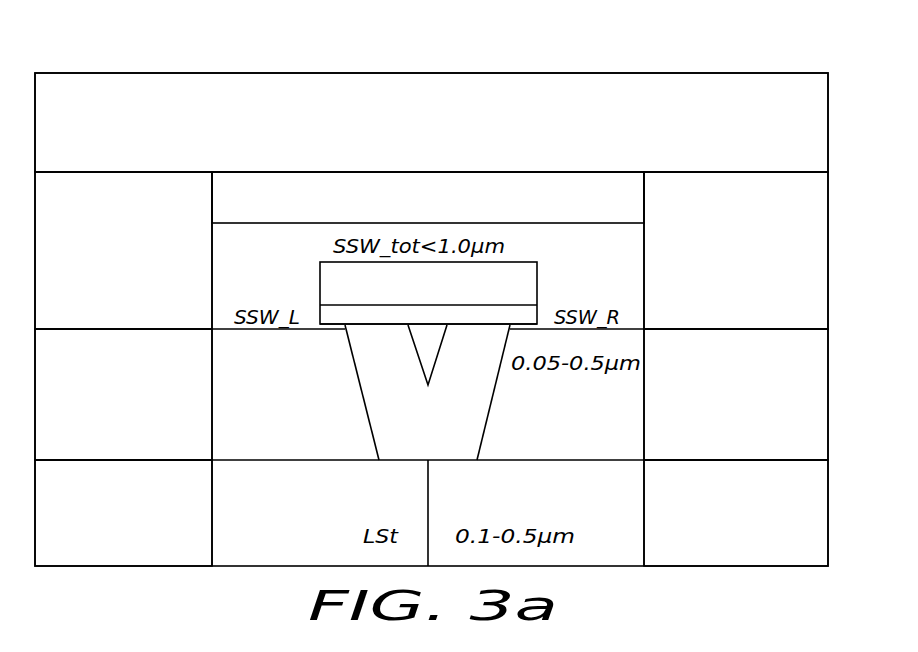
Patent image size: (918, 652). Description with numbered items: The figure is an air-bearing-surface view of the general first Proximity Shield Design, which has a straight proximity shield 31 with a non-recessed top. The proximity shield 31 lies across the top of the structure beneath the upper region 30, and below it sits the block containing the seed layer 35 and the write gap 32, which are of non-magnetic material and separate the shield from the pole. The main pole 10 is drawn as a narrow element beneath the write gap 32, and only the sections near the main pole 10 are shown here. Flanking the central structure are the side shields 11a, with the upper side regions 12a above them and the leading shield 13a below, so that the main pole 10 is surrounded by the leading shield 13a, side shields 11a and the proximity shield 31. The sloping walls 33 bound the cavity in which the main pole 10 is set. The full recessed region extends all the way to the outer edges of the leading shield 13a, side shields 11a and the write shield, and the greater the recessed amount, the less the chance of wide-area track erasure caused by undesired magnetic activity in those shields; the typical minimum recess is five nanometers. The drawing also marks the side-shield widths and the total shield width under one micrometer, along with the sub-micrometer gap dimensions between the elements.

The upper layer / substrate region 30 is at (814, 102).
The proximity shield 31 is at (560, 195).
The side region layer 12a is at (78, 200).
The side shield 11a is at (74, 360).
The leading shield 13a is at (78, 492).
The seed layer 35 is at (320, 284).
The write gap 32 is at (335, 314).
The main pole 10 is at (427, 343).
The trapezoidal sidewall 33 is at (363, 407).